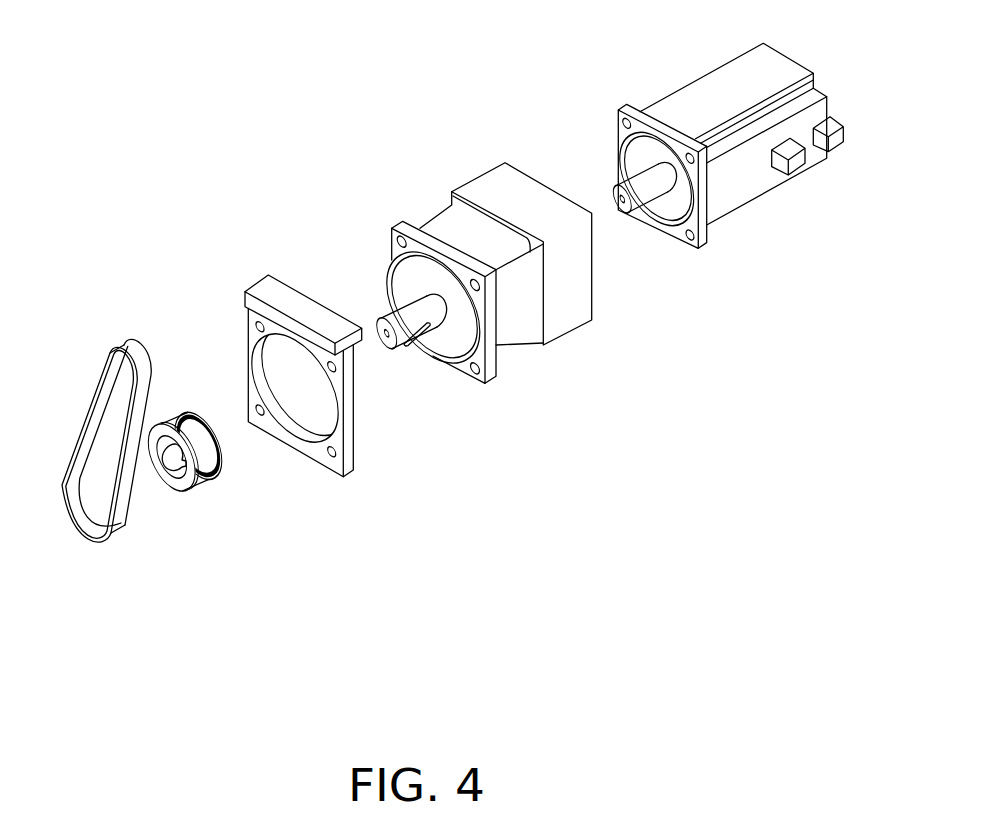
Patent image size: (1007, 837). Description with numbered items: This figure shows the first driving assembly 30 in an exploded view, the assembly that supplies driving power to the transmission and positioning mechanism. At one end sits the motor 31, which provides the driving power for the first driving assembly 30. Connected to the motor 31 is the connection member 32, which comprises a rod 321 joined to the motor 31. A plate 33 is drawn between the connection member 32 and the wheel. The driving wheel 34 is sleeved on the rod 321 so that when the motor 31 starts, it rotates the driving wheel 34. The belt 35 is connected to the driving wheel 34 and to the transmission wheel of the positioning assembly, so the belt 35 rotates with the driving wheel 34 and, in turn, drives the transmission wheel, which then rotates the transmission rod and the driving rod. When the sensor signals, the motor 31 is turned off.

The first driving assembly 30 is at (433, 48).
The motor 31 is at (727, 200).
The connection member 32 is at (479, 273).
The rod 321 is at (400, 313).
The mounting plate 33 is at (323, 458).
The driving wheel 34 is at (182, 480).
The belt 35 is at (85, 530).